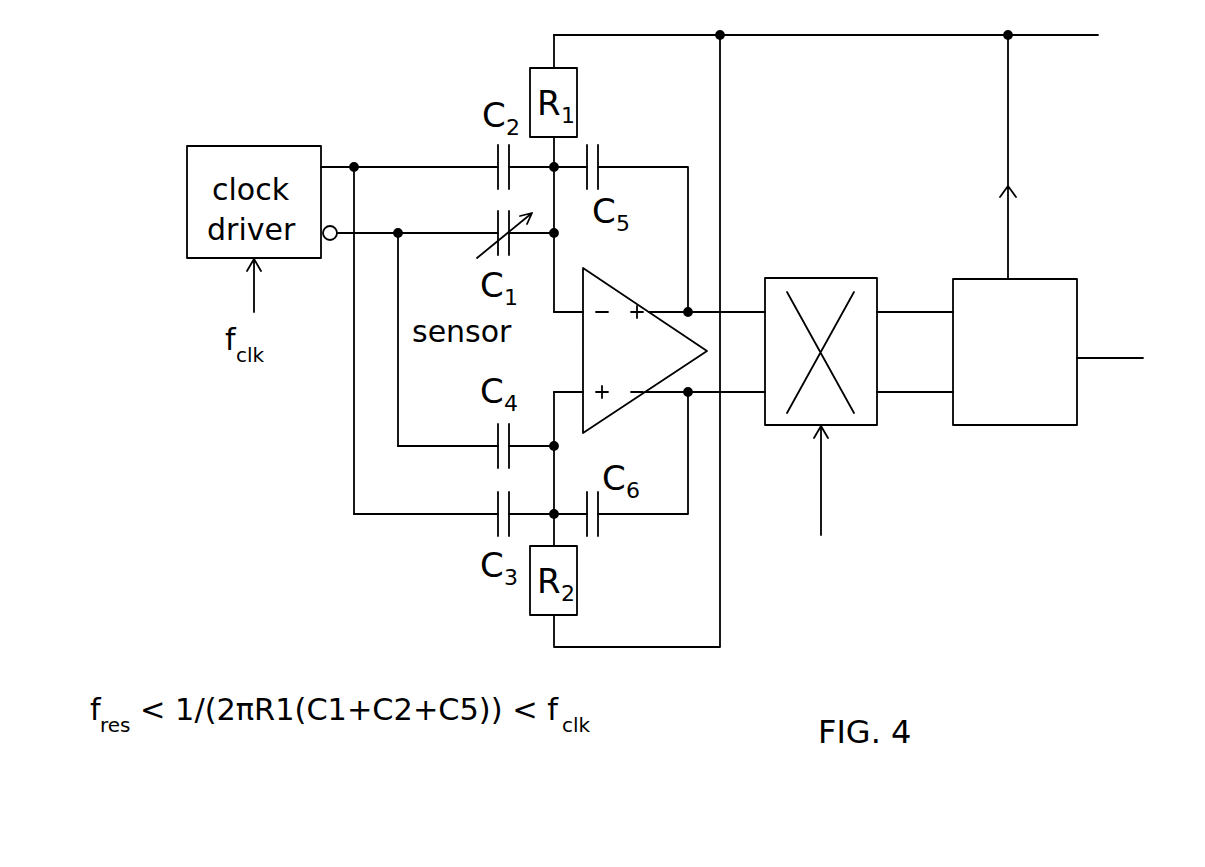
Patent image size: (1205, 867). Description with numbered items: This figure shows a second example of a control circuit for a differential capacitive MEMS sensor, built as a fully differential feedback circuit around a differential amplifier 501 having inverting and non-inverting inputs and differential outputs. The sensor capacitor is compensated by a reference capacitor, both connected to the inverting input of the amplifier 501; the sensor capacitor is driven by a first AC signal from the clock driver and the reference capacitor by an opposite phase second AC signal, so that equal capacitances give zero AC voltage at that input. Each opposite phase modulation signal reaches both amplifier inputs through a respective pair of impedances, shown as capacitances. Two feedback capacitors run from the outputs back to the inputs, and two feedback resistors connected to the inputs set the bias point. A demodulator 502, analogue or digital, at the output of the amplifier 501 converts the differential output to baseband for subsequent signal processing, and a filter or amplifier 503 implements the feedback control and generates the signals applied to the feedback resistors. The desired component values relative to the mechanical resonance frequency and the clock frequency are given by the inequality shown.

The differential amplifier 501 is at (687, 347).
The demodulator 502 is at (877, 420).
The filter or amplifier 503 is at (1065, 279).